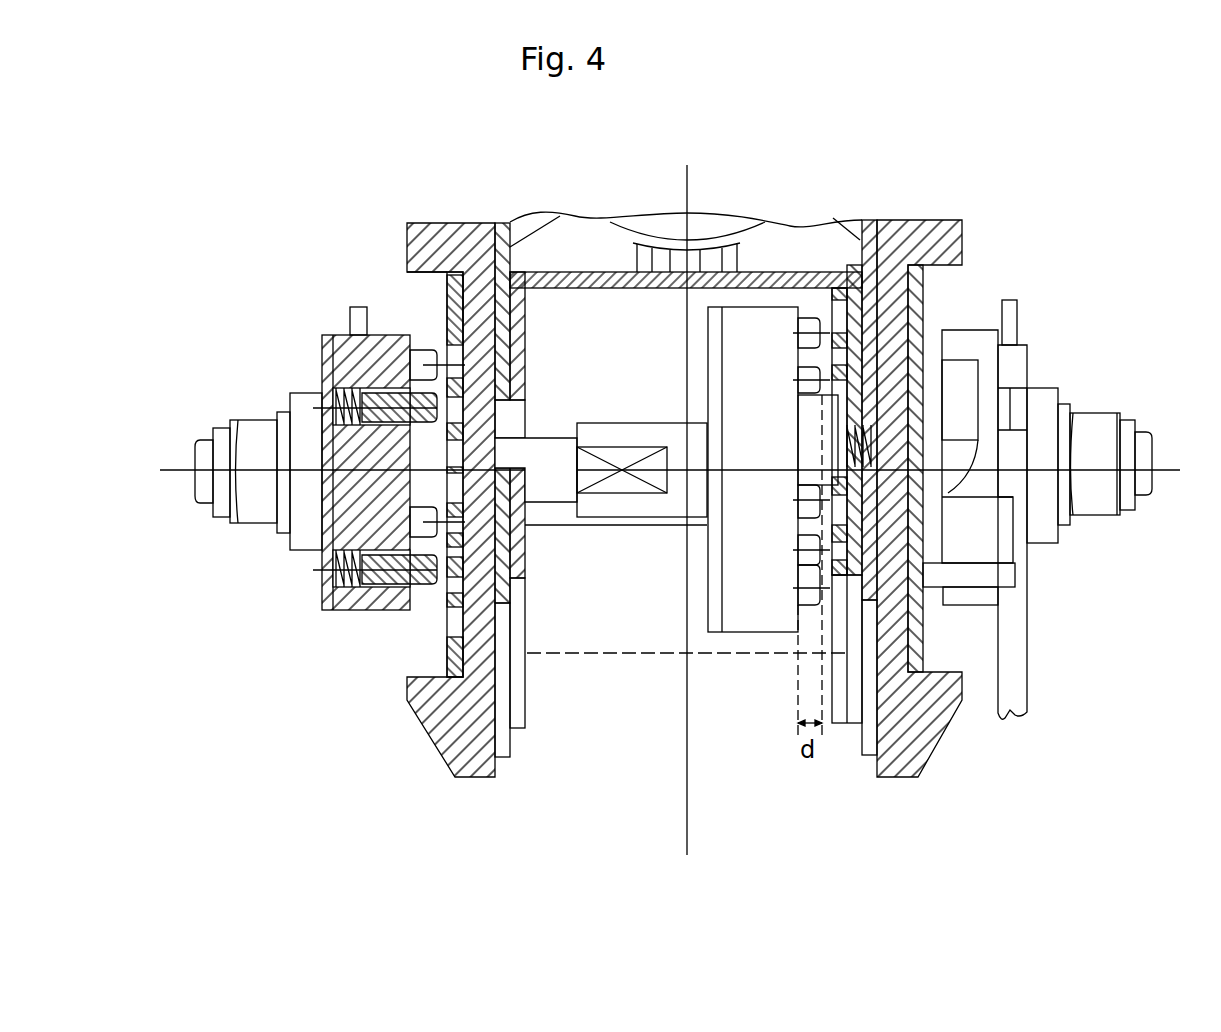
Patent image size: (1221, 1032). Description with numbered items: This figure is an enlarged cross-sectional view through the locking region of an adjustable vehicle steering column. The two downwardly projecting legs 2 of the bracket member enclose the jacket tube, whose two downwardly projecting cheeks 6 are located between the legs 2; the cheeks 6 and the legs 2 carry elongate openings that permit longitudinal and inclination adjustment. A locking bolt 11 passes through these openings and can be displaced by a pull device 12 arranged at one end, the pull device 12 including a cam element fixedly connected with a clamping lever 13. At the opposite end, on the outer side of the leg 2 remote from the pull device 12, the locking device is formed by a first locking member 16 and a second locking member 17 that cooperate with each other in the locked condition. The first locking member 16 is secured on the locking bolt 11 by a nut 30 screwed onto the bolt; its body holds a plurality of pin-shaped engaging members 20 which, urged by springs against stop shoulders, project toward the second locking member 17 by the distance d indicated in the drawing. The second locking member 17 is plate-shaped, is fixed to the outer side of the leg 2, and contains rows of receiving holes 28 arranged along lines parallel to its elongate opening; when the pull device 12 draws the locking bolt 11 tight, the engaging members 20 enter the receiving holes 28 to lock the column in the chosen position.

The legs 2 is at (482, 313).
The cheeks 6 is at (523, 577).
The locking bolt 11 is at (540, 453).
The pull device 12 is at (1020, 292).
The clamping lever 13 is at (1020, 662).
The first locking member 16 is at (750, 655).
The second locking member 17 is at (837, 292).
The engaging members 20 is at (427, 358).
The receiving holes 28 is at (482, 612).
The nut 30 is at (248, 452).